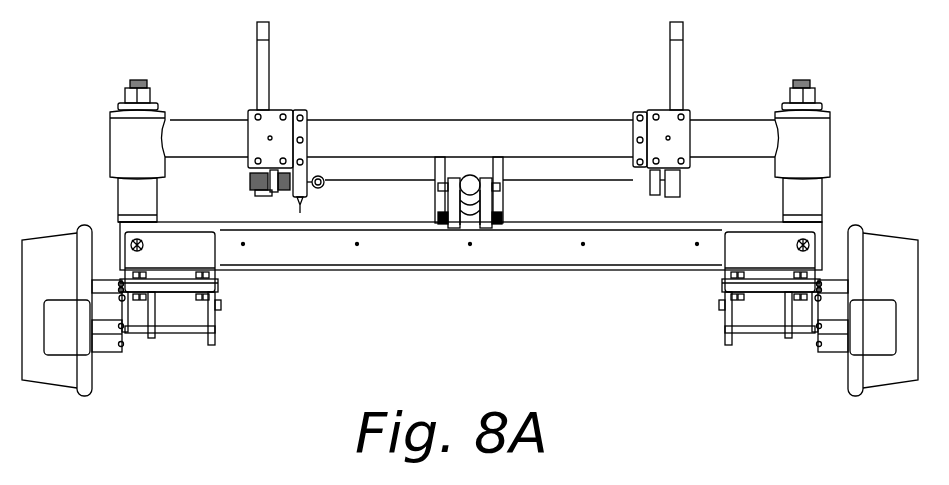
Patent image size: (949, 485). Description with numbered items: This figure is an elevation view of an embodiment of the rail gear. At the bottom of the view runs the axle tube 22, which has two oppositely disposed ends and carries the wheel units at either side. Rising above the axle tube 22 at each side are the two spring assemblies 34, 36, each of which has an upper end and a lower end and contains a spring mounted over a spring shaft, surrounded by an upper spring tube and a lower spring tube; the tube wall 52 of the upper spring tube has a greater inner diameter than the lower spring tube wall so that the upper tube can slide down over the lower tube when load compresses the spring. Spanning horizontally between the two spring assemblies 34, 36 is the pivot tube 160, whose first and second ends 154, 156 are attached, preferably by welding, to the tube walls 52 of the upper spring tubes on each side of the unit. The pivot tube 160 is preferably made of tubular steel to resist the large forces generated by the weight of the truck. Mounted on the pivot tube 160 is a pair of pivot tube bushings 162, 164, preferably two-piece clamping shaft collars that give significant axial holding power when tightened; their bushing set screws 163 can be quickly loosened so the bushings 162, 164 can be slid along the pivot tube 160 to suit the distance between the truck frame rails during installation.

The axle tube 22 is at (393, 263).
The spring assembly 34 is at (108, 127).
The spring assembly 36 is at (827, 153).
The tube wall 52 is at (110, 165).
The first end 154 is at (170, 118).
The second end 156 is at (773, 150).
The pivot tube 160 is at (728, 135).
The pivot tube bushing 162 is at (270, 125).
The bushing set screws 163 is at (655, 170).
The pivot tube bushing 164 is at (665, 125).